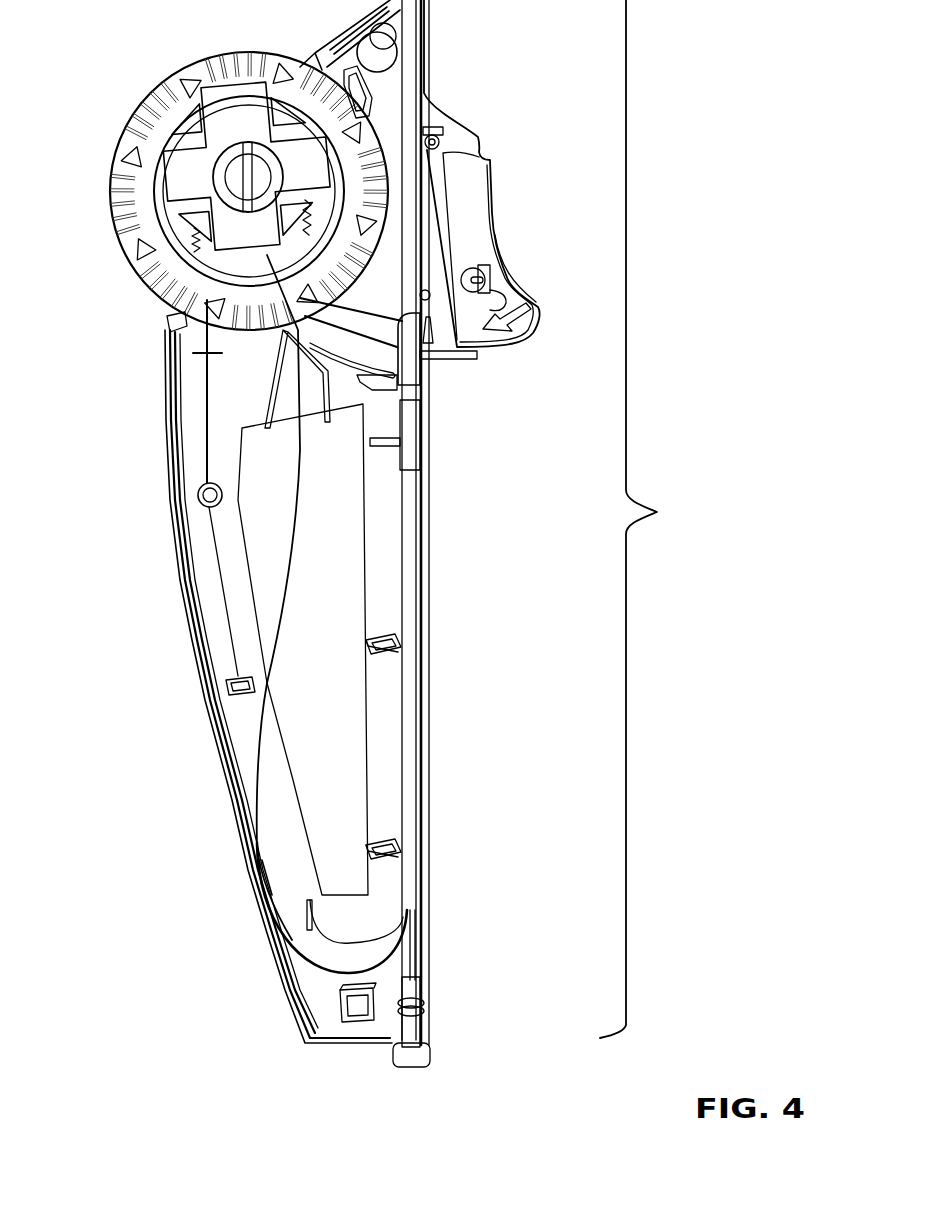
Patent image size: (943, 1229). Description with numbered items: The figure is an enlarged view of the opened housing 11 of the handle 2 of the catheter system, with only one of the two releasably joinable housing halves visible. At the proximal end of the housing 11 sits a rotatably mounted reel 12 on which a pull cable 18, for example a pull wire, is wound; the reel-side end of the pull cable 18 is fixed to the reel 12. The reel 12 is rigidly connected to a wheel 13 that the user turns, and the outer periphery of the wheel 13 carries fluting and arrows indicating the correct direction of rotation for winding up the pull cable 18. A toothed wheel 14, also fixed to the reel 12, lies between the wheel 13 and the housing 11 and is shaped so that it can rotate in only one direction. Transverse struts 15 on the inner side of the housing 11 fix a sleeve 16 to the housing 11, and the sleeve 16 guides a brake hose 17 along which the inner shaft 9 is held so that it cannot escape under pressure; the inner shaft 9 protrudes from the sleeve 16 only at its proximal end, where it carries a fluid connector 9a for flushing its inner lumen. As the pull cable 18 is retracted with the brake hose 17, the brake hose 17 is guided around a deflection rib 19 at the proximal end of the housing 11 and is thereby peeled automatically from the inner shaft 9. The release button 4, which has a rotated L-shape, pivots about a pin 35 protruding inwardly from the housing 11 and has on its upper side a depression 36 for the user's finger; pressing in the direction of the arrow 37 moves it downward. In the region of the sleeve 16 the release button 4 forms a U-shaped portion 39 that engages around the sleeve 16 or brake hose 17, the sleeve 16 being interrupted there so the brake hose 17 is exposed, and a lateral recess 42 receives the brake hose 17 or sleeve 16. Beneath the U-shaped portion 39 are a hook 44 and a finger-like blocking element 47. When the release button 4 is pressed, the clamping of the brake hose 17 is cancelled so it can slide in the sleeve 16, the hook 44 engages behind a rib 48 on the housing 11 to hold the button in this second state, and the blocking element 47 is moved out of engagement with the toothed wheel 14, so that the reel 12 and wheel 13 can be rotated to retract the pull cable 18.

The handle 2 is at (641, 519).
The release button 4 is at (480, 207).
The inner shaft 9 is at (413, 943).
The fluid connector 9a is at (430, 1060).
The housing 11 is at (168, 455).
The reel 12 is at (215, 187).
The wheel 13 is at (180, 140).
The toothed wheel 14 is at (308, 200).
The transverse struts 15 is at (400, 640).
The sleeve 16 is at (407, 707).
The brake hose 17 is at (413, 397).
The pull cable 18 is at (277, 607).
The deflection rib 19 is at (367, 960).
The pin 35 is at (440, 140).
The depression 36 is at (523, 280).
The arrow 37 is at (515, 317).
The U-shaped portion 39 is at (413, 362).
The lateral recess 42 is at (443, 320).
The hook 44 is at (420, 390).
The blocking element 47 is at (362, 325).
The rib 48 is at (322, 383).